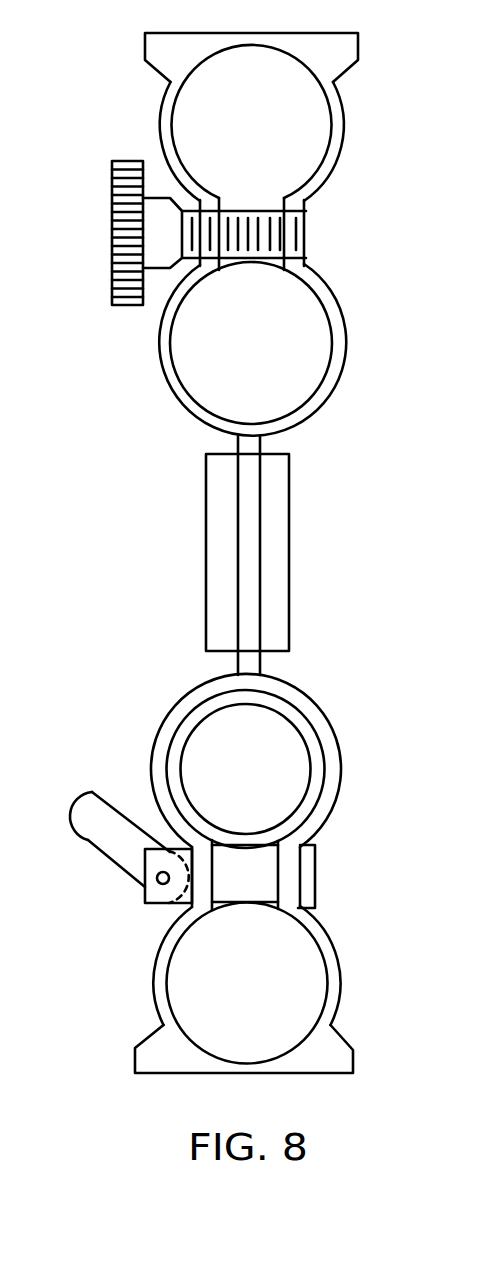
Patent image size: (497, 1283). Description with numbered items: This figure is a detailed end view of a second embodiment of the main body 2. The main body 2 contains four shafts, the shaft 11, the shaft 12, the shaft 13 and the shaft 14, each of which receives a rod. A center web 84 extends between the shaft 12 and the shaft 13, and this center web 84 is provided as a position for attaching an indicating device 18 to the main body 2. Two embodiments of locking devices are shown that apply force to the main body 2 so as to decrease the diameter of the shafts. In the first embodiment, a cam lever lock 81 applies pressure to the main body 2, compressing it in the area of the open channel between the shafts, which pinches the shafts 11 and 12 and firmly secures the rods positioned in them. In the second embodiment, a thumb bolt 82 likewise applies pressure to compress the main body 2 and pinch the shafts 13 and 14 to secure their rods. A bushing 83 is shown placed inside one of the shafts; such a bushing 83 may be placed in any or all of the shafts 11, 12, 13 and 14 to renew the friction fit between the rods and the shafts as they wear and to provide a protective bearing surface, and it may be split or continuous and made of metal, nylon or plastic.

The main body 2 is at (360, 50).
The shaft 11 is at (233, 123).
The shaft 12 is at (245, 358).
The shaft 13 is at (252, 766).
The shaft 14 is at (245, 982).
The indicating device 18 is at (289, 542).
The cam lever lock 81 is at (114, 858).
The thumb bolt 82 is at (115, 246).
The bushing 83 is at (307, 728).
The center web 84 is at (237, 661).